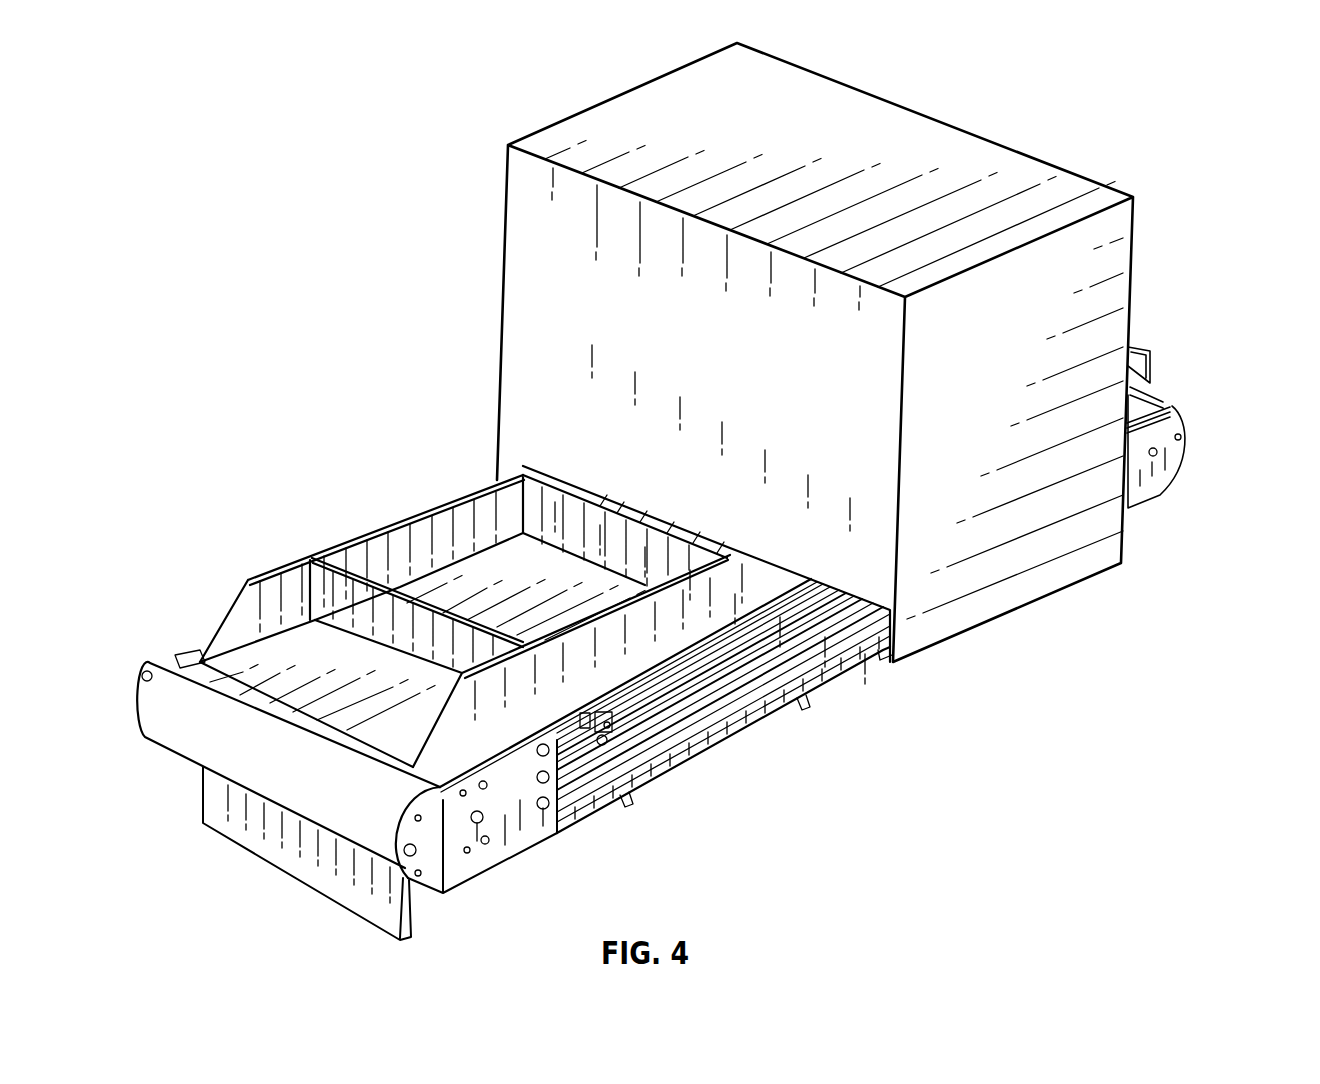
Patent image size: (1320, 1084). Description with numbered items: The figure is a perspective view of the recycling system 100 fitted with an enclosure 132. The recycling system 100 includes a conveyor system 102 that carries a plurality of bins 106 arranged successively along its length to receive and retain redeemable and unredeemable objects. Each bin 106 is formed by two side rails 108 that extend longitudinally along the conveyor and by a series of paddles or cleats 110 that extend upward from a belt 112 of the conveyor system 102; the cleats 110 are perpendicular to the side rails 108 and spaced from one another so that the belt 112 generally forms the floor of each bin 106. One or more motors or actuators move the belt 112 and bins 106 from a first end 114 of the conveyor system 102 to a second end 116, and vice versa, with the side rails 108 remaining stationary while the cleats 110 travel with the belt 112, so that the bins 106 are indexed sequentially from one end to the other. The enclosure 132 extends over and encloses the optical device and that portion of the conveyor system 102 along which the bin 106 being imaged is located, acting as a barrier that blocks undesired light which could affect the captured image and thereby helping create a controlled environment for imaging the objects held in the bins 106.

The recycling system 100 is at (401, 264).
The conveyor system 102 is at (375, 467).
The bin 106 is at (500, 582).
The side rail 108 is at (645, 638).
The cleat 110 is at (343, 565).
The belt 112 is at (297, 647).
The first end 114 is at (425, 857).
The second end 116 is at (1182, 417).
The enclosure 132 is at (1132, 296).